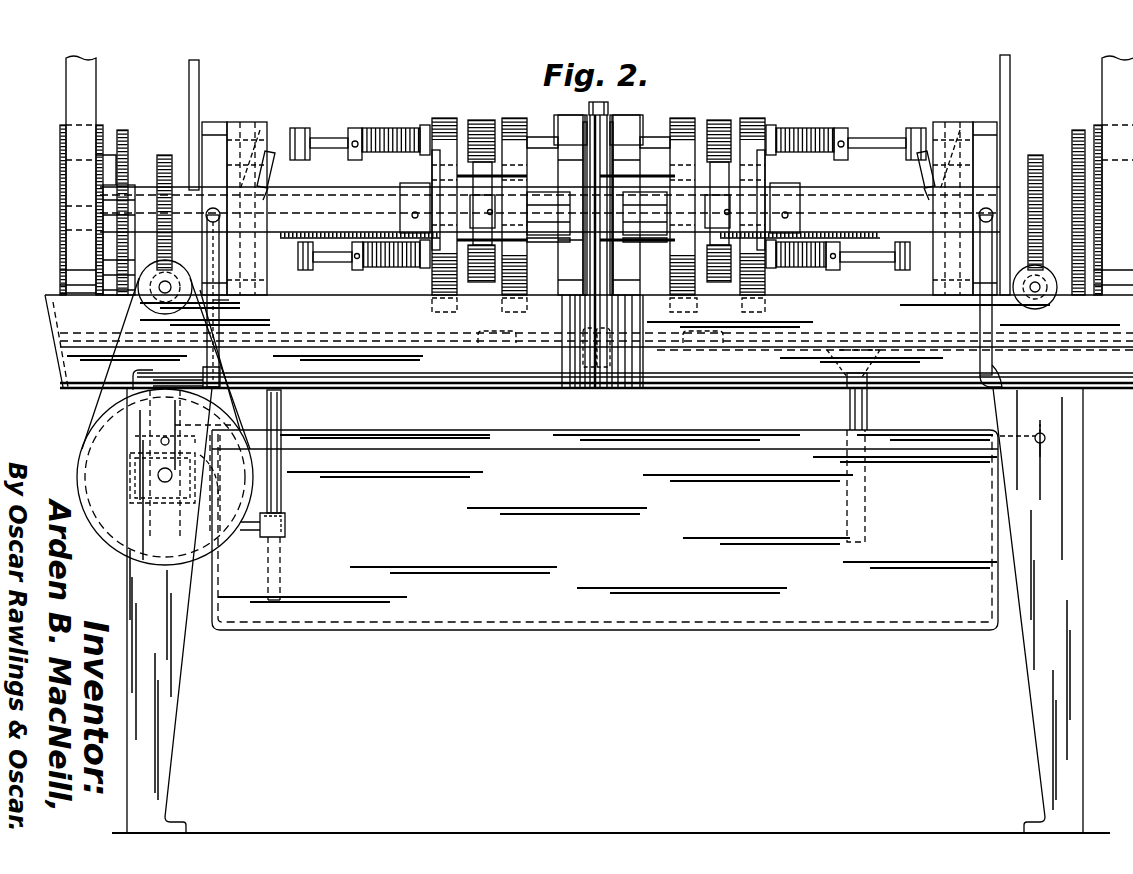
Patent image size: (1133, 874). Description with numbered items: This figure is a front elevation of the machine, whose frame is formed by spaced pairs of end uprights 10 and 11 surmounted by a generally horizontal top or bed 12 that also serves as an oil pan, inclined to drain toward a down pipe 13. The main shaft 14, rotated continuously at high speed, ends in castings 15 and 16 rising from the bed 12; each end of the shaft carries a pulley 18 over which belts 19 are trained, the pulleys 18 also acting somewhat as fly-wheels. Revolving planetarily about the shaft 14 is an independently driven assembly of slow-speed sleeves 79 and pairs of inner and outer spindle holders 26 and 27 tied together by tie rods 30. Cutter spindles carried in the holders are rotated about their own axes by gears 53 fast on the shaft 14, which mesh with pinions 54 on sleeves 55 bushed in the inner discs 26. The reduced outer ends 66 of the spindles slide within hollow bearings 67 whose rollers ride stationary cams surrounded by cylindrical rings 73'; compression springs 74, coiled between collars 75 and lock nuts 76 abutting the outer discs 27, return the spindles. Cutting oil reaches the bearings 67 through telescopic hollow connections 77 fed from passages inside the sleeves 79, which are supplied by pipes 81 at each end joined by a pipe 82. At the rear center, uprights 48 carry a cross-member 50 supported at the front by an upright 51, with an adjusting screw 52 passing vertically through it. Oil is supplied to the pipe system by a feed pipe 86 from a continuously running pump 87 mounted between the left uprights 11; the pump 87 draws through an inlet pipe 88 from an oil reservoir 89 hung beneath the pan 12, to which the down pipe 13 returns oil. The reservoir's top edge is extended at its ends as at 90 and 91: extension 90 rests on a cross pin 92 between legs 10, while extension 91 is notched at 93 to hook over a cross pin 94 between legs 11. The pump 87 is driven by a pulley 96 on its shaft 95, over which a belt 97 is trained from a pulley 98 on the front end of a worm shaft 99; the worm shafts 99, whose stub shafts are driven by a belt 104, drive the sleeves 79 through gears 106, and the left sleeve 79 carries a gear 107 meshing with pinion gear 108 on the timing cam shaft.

The end uprights 10 is at (1035, 650).
The end uprights 11 is at (176, 678).
The top or bed 12 is at (52, 345).
The down pipe 13 is at (850, 405).
The shaft 14 is at (108, 241).
The casting 15 is at (215, 122).
The casting 16 is at (988, 122).
The pulley 18 is at (60, 172).
The belts 19 is at (66, 97).
The spindle holder 26 is at (519, 120).
The spindle holder 27 is at (430, 165).
The tie rods 30 is at (475, 302).
The uprights 48 is at (566, 157).
The cross-member 50 is at (612, 122).
The upright 51 is at (620, 275).
The screw 52 is at (590, 100).
The gears 53 is at (566, 208).
The pinions 54 is at (484, 122).
The sleeves 55 is at (722, 298).
The reduced portion 66 is at (330, 138).
The hollow bearings 67 is at (282, 128).
The cylindrical ring 73' is at (600, 191).
The compression springs 74 is at (392, 128).
The collars 75 is at (356, 128).
The lock nuts 76 is at (425, 125).
The telescopic hollow connections 77 is at (278, 168).
The sleeves 79 is at (342, 212).
The pipes 81 is at (277, 256).
The pipe 82 is at (700, 377).
The feed pipe 86 is at (230, 398).
The pump 87 is at (155, 502).
The inlet pipe 88 is at (281, 413).
The oil reservoir 89 is at (654, 630).
The extension 90 is at (1022, 420).
The extension 91 is at (225, 420).
The cross pin 92 is at (1033, 460).
The notch 93 is at (222, 467).
The cross pin 94 is at (158, 444).
The shaft 95 is at (158, 474).
The pulley 96 is at (272, 498).
The belt 97 is at (226, 357).
The pulley 98 is at (230, 306).
The worm shaft 99 is at (60, 271).
The belt 104 is at (189, 90).
The gears 106 is at (164, 155).
The gear 107 is at (124, 130).
The pinion gear 108 is at (136, 296).